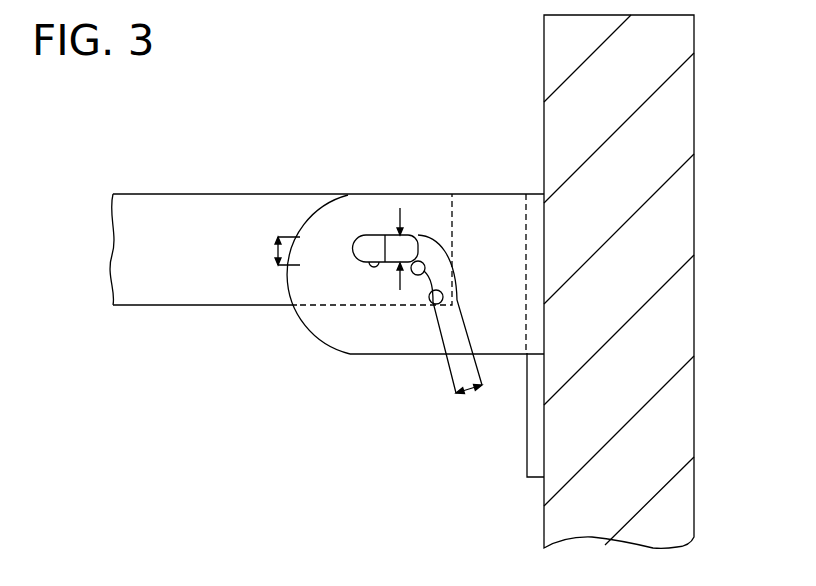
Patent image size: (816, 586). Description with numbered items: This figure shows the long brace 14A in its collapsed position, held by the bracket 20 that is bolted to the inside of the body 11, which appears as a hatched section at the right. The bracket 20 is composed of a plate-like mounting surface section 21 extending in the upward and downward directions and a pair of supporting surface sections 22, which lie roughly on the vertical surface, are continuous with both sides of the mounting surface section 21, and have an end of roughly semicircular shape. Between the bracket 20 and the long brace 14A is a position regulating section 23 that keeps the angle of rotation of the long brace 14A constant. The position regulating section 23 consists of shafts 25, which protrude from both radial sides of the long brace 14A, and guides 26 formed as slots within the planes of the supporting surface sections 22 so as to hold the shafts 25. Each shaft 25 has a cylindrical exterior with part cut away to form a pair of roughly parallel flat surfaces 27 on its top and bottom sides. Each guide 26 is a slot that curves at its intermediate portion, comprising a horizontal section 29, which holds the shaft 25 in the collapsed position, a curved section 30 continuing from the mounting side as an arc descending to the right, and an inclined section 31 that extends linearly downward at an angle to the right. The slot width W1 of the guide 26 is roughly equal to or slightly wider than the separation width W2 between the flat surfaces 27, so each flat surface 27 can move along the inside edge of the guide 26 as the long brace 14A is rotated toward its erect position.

The body 11 is at (677, 110).
The long brace 14A is at (147, 208).
The bracket 20 is at (306, 345).
The mounting surface section 21 is at (527, 475).
The supporting surface section 22 is at (313, 320).
The position regulating section 23 is at (430, 230).
The shaft 25 is at (412, 249).
The guide 26 is at (388, 352).
The flat surface 27 is at (397, 234).
The horizontal section 29 is at (374, 267).
The curved section 30 is at (416, 274).
The inclined section 31 is at (434, 304).
The slot width W1 is at (278, 250).
The separation width W2 is at (410, 233).